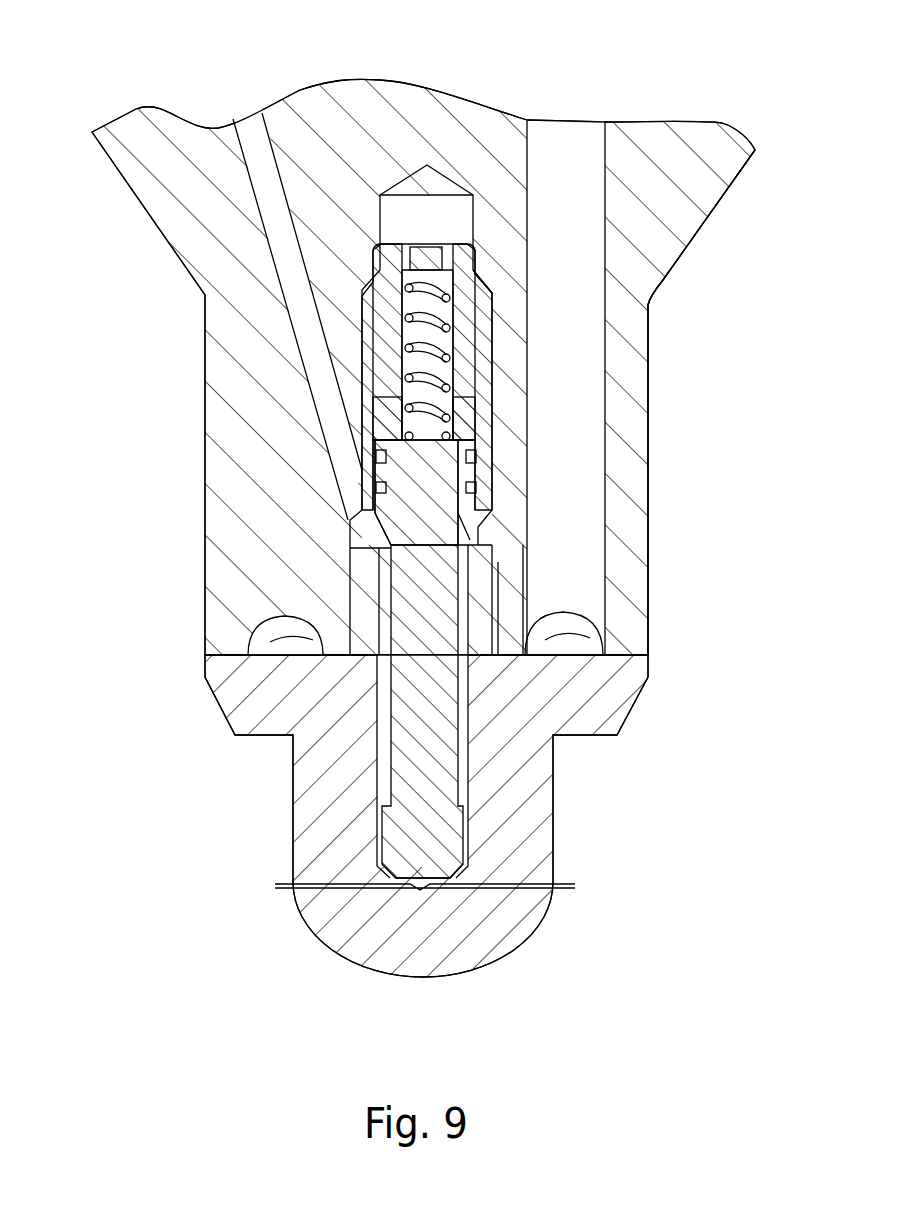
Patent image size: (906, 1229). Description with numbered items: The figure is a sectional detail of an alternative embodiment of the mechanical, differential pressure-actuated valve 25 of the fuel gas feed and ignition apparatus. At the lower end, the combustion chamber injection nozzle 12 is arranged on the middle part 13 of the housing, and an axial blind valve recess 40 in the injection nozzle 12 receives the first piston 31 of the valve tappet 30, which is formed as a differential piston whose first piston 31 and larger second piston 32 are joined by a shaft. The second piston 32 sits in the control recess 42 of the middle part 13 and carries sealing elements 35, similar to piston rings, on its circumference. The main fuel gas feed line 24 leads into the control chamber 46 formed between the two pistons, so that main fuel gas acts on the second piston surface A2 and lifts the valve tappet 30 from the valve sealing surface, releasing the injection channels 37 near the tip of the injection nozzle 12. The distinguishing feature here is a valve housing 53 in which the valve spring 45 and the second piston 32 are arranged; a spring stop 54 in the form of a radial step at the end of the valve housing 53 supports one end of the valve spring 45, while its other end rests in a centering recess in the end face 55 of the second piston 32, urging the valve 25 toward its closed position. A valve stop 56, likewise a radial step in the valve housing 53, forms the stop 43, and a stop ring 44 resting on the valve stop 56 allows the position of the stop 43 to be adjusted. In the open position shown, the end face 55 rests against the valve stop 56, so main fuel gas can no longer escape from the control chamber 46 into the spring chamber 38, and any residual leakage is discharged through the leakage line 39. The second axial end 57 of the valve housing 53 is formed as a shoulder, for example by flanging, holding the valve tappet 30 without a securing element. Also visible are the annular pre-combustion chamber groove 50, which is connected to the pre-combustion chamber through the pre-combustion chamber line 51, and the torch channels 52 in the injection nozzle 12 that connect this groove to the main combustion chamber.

The combustion chamber injection nozzle 12 is at (573, 700).
The middle part 13 is at (640, 228).
The main fuel gas feed line 24 is at (267, 193).
The mechanical, differential pressure-actuated valve 25 is at (350, 527).
The valve tappet 30 is at (430, 753).
The first piston 31 is at (478, 832).
The second piston 32 is at (530, 482).
The sealing elements 35 is at (380, 488).
The injection channels 37 is at (293, 888).
The spring chamber 38 is at (413, 217).
The leakage line 39 is at (335, 118).
The valve recess 40 is at (373, 783).
The control recess 42 is at (477, 277).
The stop 43 is at (378, 455).
The stop ring 44 is at (376, 400).
The valve spring 45 is at (490, 302).
The control chamber 46 is at (362, 548).
The pre-combustion chamber groove 50 is at (250, 628).
The pre-combustion chamber line 51 is at (572, 475).
The torch channels 52 is at (613, 660).
The valve housing 53 is at (472, 320).
The spring stop 54 is at (405, 243).
The end face 55 is at (478, 422).
The valve stop 56 is at (460, 386).
The second axial end 57 is at (485, 536).
The second piston surface A2 is at (482, 548).